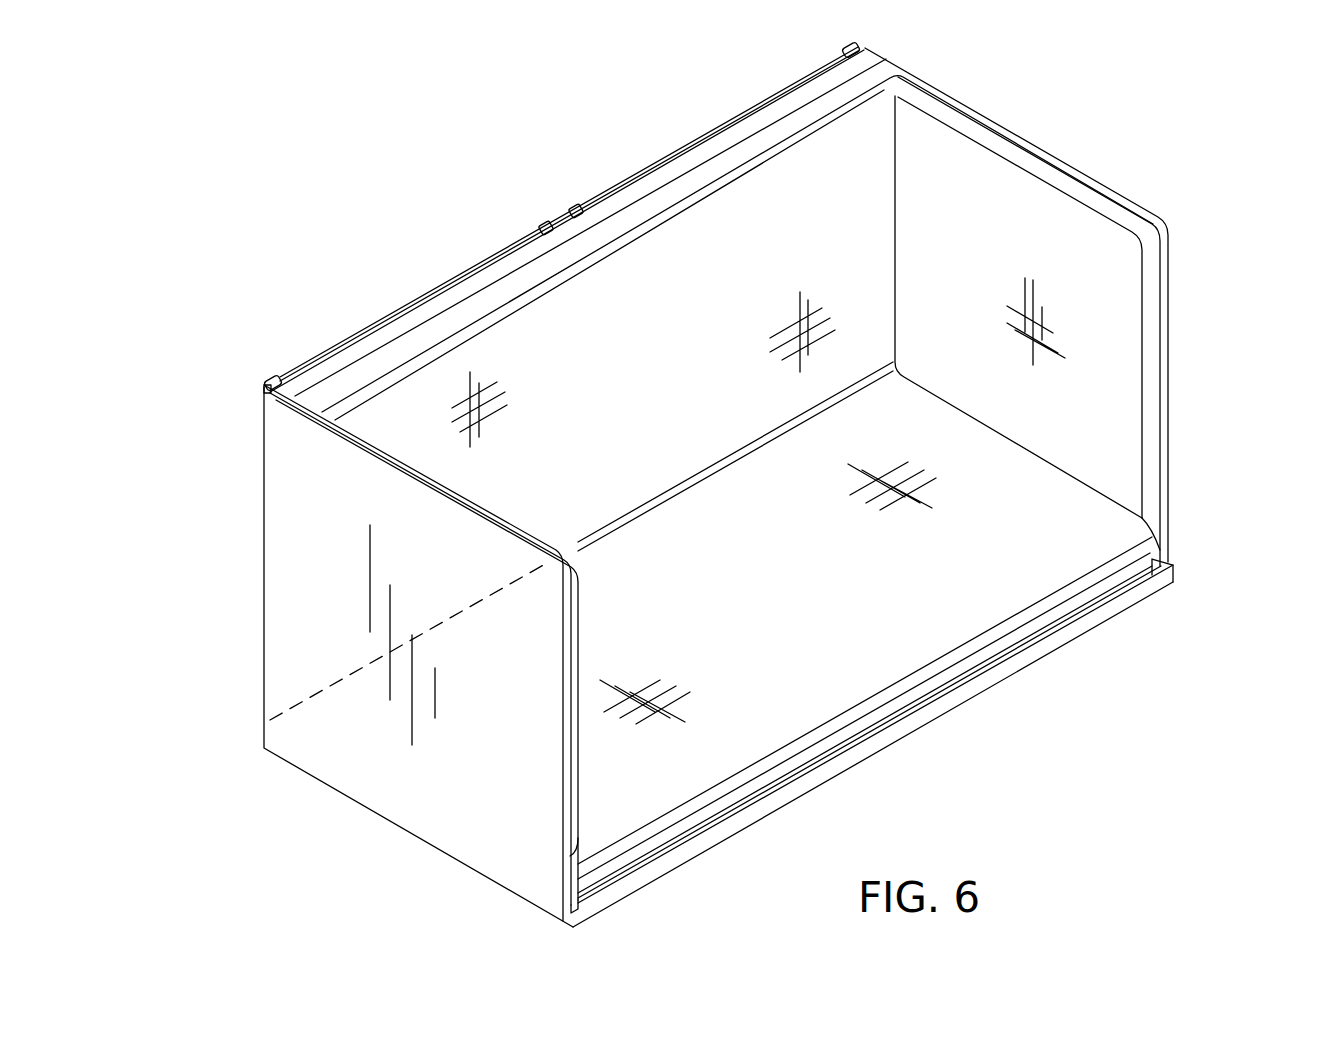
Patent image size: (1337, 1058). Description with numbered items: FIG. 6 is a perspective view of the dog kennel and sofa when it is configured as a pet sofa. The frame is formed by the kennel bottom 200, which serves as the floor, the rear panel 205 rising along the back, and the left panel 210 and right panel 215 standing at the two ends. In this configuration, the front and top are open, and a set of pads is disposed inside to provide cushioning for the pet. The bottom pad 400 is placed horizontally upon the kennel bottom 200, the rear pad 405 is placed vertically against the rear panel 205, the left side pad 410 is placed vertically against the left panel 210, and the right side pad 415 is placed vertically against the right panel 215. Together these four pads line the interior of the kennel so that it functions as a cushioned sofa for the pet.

The kennel bottom 200 is at (1067, 645).
The rear panel 205 is at (343, 352).
The left panel 210 is at (300, 541).
The right panel 215 is at (1110, 185).
The bottom pad 400 is at (903, 652).
The rear pad 405 is at (697, 230).
The left side pad 410 is at (578, 763).
The right side pad 415 is at (1143, 380).